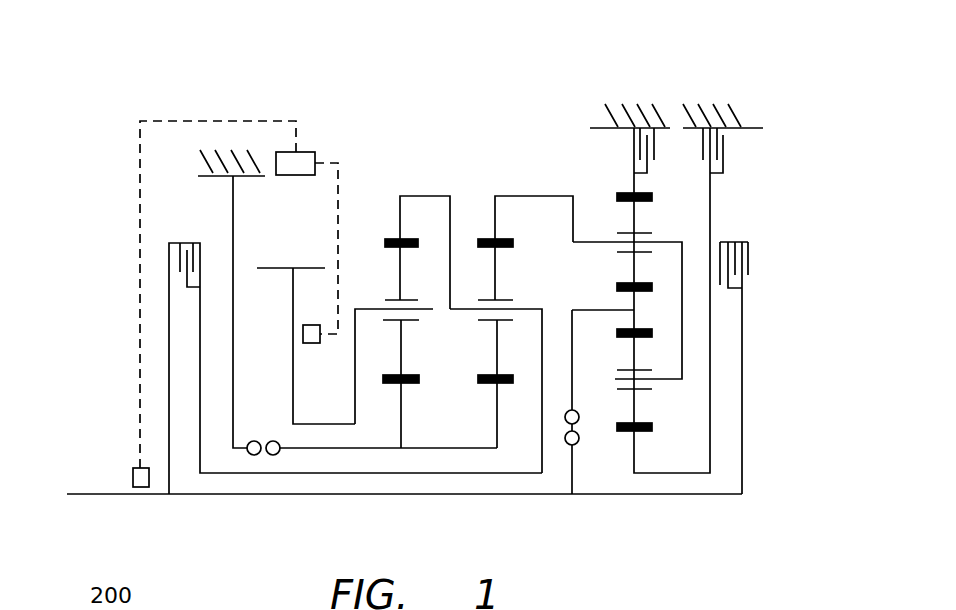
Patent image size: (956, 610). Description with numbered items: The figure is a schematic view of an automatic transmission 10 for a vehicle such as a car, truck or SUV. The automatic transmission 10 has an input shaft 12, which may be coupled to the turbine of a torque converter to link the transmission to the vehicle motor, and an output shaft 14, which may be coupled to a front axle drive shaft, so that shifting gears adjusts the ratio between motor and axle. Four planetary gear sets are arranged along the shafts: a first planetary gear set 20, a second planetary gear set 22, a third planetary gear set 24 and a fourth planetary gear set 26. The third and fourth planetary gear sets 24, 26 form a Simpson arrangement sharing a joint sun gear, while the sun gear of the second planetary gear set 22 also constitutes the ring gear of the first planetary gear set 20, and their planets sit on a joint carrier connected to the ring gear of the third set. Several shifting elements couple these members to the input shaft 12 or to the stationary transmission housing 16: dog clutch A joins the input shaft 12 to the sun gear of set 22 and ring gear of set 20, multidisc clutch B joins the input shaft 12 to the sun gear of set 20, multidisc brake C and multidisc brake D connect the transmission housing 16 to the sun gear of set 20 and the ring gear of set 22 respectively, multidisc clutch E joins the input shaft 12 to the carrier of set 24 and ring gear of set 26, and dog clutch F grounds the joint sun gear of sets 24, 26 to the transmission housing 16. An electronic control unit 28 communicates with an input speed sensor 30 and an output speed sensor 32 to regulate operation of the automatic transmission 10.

The automatic transmission 10 is at (183, 80).
The input shaft 12 is at (88, 492).
The output shaft 14 is at (295, 390).
The transmission housing 16 is at (250, 177).
The first planetary gear set 20 is at (655, 399).
The second planetary gear set 22 is at (672, 226).
The third planetary gear set 24 is at (472, 283).
The fourth planetary gear set 26 is at (418, 332).
The electronic control unit 28 is at (318, 150).
The input speed sensor 30 is at (132, 480).
The output speed sensor 32 is at (308, 345).
The dog clutch A is at (578, 444).
The multidisc clutch B is at (731, 242).
The multidisc brake C is at (732, 160).
The multidisc brake D is at (628, 160).
The multidisc clutch E is at (202, 238).
The dog clutch F is at (249, 454).